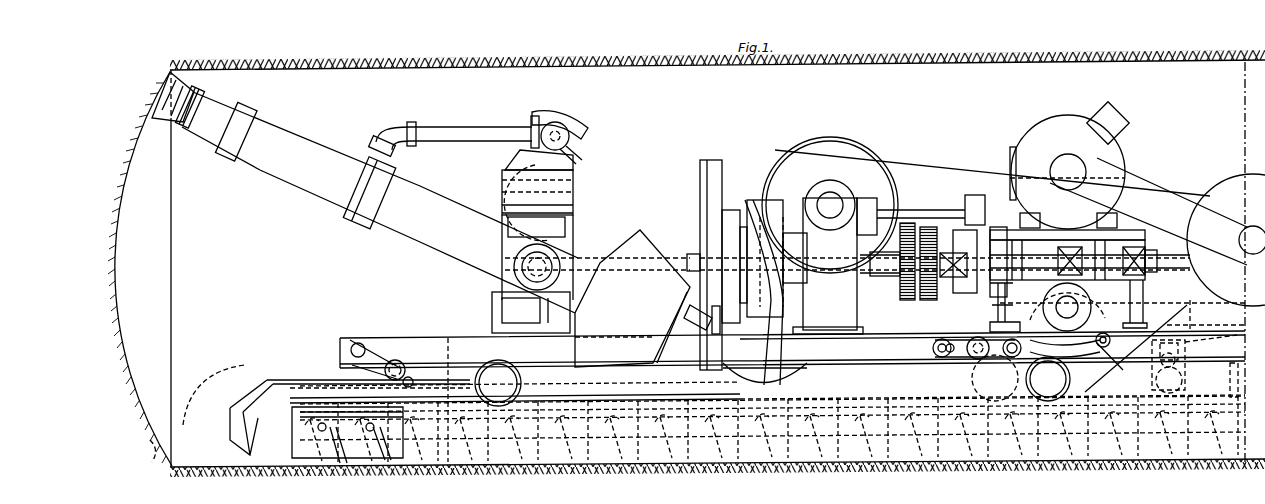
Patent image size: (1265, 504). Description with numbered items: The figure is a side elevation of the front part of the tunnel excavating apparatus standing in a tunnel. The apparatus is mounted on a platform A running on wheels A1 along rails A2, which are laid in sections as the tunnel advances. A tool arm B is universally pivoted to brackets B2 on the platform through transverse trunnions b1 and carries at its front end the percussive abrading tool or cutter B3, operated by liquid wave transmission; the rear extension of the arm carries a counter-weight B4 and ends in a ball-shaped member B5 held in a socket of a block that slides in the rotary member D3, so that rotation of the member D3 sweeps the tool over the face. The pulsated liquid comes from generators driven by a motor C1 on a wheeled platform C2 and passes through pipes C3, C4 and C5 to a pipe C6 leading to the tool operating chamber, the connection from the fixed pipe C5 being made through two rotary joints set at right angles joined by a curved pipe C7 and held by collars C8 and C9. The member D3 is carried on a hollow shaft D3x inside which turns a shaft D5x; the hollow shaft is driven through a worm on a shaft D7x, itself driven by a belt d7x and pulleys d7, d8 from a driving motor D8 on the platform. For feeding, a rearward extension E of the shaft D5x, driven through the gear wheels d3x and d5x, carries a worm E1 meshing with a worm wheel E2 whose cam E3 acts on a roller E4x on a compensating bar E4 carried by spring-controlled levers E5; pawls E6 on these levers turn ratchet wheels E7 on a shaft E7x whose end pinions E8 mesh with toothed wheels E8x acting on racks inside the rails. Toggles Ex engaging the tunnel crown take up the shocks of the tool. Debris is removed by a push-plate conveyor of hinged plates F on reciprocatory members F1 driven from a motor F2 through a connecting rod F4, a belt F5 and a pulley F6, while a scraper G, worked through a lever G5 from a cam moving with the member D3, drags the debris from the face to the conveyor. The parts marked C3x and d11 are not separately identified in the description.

The platform A is at (905, 348).
The wheels A1 is at (498, 398).
The rails A2 is at (470, 450).
The tool arm B is at (380, 202).
The brackets B2 is at (541, 226).
The abrading tool or cutter B3 is at (196, 94).
The counter-weight B4 is at (632, 298).
The ball-shaped member B5 is at (683, 318).
The transverse trunnions b1 is at (531, 253).
The motor C1 is at (320, 380).
The wheeled platform C2 is at (408, 372).
The pipe C3 is at (395, 358).
The pivot C3x is at (357, 344).
The intermediate pipe C4 is at (762, 195).
The fixed pipe C5 is at (689, 258).
The pipe C6 is at (505, 130).
The curved pipe C7 is at (521, 185).
The collar C8 is at (531, 312).
The collar C9 is at (568, 161).
The rotary member D3 is at (712, 165).
The hollow shaft D3x is at (878, 285).
The shaft D5x is at (945, 276).
The shaft D7x is at (832, 198).
The driving motor D8 is at (1205, 200).
The gear wheel d3x is at (906, 300).
The gear wheel d5x is at (929, 300).
The pulley d7 is at (878, 190).
The belt d7x is at (968, 194).
The pulley d8 is at (1243, 240).
The shifter d11 is at (966, 205).
The rearward extension of shaft E is at (1162, 191).
The worm E1 is at (1070, 250).
The worm wheel E2 is at (1092, 305).
The cam E3 is at (1105, 345).
The compensating bar E4 is at (1063, 370).
The roller E4x is at (1096, 359).
The spring controlled levers E5 is at (932, 358).
The pawls E6 is at (946, 340).
The ratchet wheels E7 is at (999, 336).
The shaft E7x is at (945, 338).
The pinions E8 is at (966, 360).
The toothed wheels E8x is at (990, 362).
The toggles Ex is at (562, 113).
The hinged plates F is at (1190, 455).
The reciprocatory members F1 is at (325, 427).
The motor F2 is at (1055, 130).
The connecting rod F4 is at (745, 488).
The belt F5 is at (1148, 177).
The pulley F6 is at (1067, 167).
The scraper G is at (232, 440).
The lever G5 is at (770, 350).